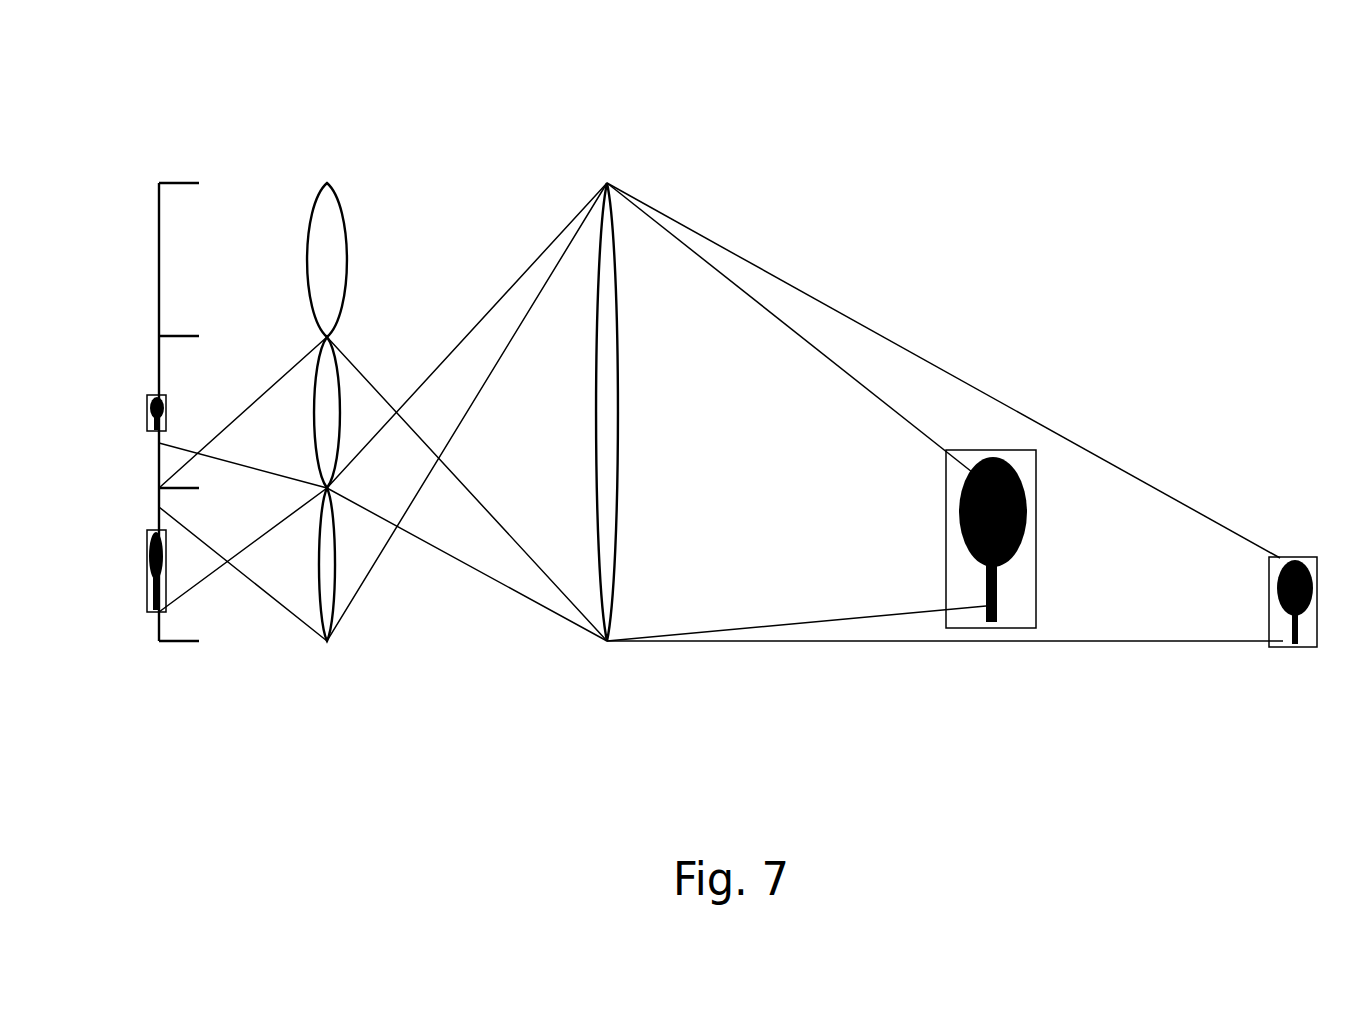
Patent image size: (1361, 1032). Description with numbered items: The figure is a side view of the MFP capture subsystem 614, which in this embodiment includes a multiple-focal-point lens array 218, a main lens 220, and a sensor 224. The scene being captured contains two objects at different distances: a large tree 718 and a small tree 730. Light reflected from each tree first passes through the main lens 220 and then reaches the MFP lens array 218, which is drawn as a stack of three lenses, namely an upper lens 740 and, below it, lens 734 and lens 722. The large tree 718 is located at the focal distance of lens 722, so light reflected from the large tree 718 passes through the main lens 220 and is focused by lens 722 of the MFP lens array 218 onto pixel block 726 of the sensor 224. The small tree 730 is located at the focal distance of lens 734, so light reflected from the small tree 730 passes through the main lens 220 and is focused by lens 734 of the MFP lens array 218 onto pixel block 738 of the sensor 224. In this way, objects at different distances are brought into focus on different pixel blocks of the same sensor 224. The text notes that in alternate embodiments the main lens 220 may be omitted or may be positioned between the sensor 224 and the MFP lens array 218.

The sensor 224 is at (232, 139).
The multiple-focal-point (MFP) lens array 218 is at (376, 174).
The first lenslet 740 is at (347, 267).
The lens 734 is at (335, 396).
The lens 722 is at (333, 593).
The main lens 220 is at (617, 443).
The pixel block 738 is at (163, 409).
The pixel block 726 is at (163, 553).
The large tree 718 is at (1028, 583).
The small tree 730 is at (1283, 558).
The MFP capture subsystem 614 is at (1217, 872).